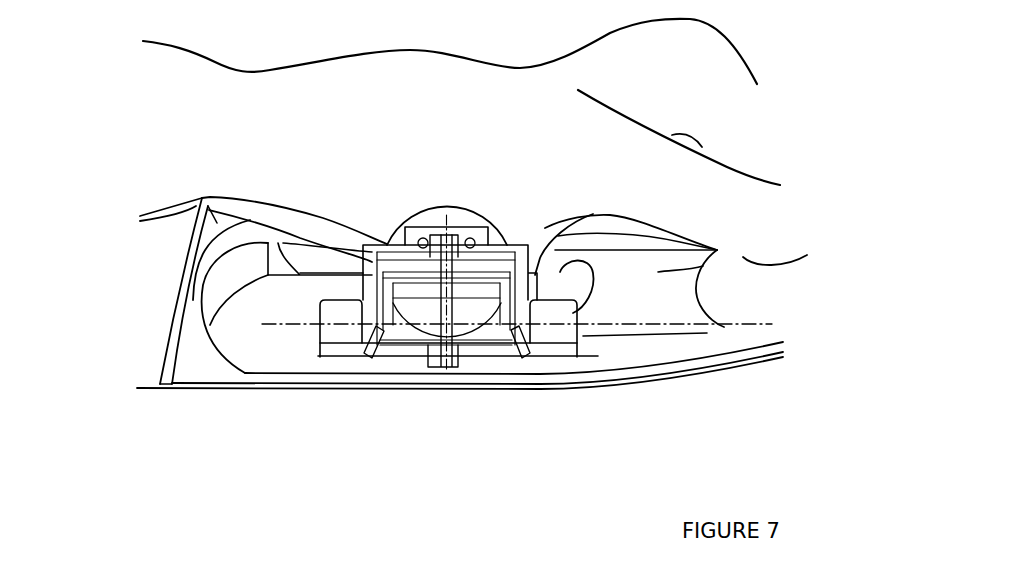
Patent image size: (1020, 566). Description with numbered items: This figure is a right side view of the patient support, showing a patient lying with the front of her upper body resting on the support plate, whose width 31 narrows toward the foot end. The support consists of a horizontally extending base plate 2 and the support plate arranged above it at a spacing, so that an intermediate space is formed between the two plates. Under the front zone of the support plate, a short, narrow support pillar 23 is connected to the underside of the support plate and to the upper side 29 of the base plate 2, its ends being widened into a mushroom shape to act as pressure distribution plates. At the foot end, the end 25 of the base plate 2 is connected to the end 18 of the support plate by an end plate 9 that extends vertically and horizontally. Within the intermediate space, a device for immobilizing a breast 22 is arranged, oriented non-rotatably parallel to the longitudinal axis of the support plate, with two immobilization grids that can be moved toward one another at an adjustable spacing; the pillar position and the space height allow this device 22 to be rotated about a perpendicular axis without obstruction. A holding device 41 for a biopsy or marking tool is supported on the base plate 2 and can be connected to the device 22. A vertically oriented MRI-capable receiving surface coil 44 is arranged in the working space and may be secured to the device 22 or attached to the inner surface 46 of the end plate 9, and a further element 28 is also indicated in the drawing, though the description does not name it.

The base plate 2 is at (234, 329).
The end plate 9 is at (164, 283).
The end of the support plate 18 is at (140, 218).
The device for immobilizing a breast 22 is at (410, 343).
The support pillar 23 is at (727, 257).
The end of the base plate 25 is at (175, 385).
The pivot axis 28 is at (757, 327).
The upper side of the base plate 29 is at (259, 355).
The width of the support plate surface 31 is at (213, 297).
The holding device for a medical tool 41 is at (447, 272).
The receiving surface coil 44 is at (368, 255).
The inner surface of the end plate 46 is at (223, 278).